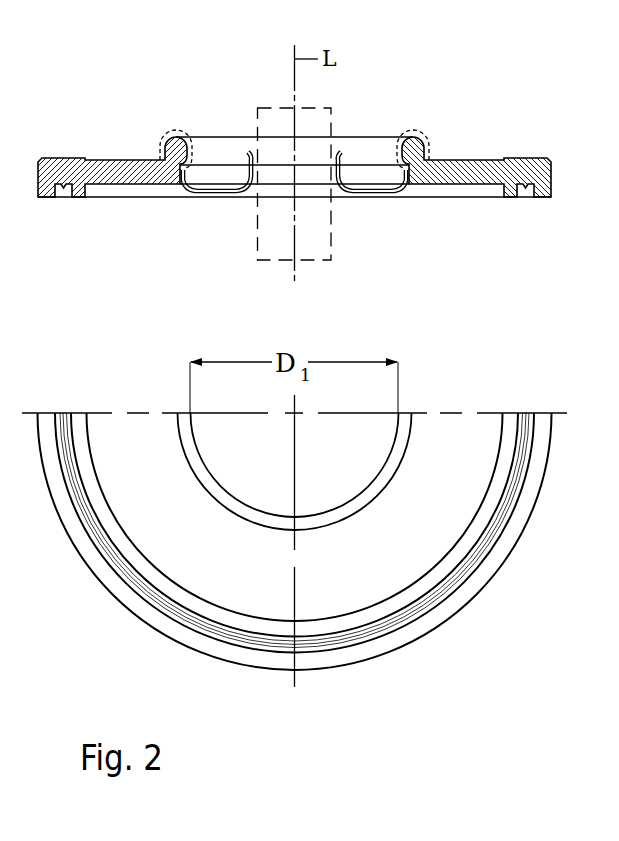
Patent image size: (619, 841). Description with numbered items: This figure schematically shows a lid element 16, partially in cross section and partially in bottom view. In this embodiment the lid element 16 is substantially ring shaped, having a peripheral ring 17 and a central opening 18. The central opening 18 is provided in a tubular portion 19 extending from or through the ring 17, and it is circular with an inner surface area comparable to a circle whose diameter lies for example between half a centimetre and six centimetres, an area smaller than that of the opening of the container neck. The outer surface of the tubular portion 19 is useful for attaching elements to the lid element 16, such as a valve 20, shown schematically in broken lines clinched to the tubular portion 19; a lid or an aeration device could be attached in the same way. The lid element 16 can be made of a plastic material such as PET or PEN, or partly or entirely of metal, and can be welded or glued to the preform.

The lid element 16 is at (553, 148).
The peripheral ring 17 is at (463, 170).
The central opening 18 is at (364, 150).
The tubular portion 19 is at (170, 134).
The valve 20 is at (260, 102).